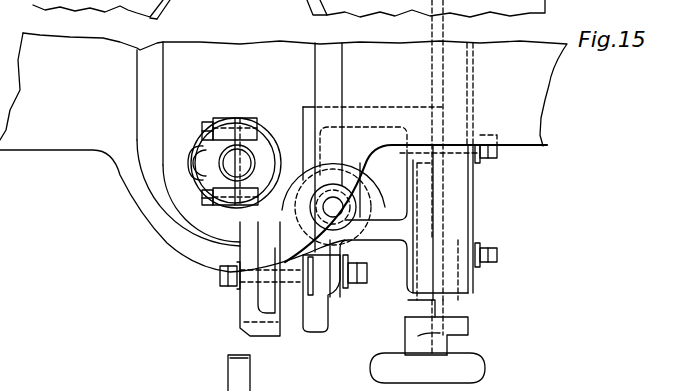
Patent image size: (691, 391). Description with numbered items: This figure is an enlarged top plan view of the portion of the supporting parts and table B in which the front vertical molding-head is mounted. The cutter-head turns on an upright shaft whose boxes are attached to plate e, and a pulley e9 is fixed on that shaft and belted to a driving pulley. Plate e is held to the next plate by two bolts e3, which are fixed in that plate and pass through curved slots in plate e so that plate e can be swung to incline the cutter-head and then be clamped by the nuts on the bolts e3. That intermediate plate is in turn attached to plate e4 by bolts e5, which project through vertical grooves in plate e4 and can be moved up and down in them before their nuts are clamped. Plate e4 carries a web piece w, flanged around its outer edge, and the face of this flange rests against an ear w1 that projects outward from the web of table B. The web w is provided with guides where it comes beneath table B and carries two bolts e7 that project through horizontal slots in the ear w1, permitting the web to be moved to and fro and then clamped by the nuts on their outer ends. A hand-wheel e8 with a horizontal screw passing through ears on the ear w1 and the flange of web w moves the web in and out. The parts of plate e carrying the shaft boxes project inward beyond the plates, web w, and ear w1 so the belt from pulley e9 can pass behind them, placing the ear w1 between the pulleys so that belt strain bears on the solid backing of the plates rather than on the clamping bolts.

The table B is at (368, 76).
The plate e is at (241, 311).
The bolts e3 is at (215, 118).
The plate e4 is at (321, 293).
The bolts e5 is at (359, 279).
The bolts e7 is at (497, 153).
The hand-wheel e8 is at (472, 354).
The pulley e9 is at (264, 116).
The web piece w is at (340, 204).
The ear w1 is at (474, 200).